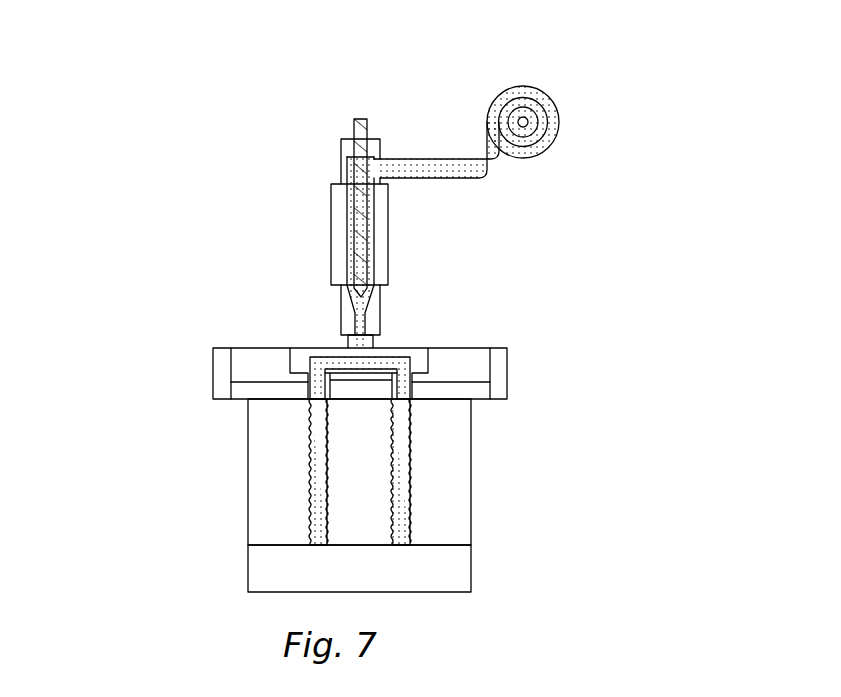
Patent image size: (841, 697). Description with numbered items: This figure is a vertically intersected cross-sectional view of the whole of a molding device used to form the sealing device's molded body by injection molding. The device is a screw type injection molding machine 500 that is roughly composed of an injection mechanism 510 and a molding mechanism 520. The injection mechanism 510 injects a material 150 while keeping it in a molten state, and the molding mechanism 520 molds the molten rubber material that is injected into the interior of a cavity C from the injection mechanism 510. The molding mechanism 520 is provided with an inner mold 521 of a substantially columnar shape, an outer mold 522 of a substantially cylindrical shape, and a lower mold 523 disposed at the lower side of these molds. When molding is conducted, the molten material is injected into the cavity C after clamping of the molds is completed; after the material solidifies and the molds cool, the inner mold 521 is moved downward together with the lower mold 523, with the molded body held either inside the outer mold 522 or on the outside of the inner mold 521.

The screw type injection molding machine 500 is at (207, 150).
The injection mechanism 510 is at (310, 233).
The material 150 is at (504, 90).
The molding mechanism 520 is at (513, 475).
The inner mold 521 is at (373, 523).
The outer mold 522 is at (262, 466).
The lower mold 523 is at (260, 570).
The cavity C is at (309, 430).